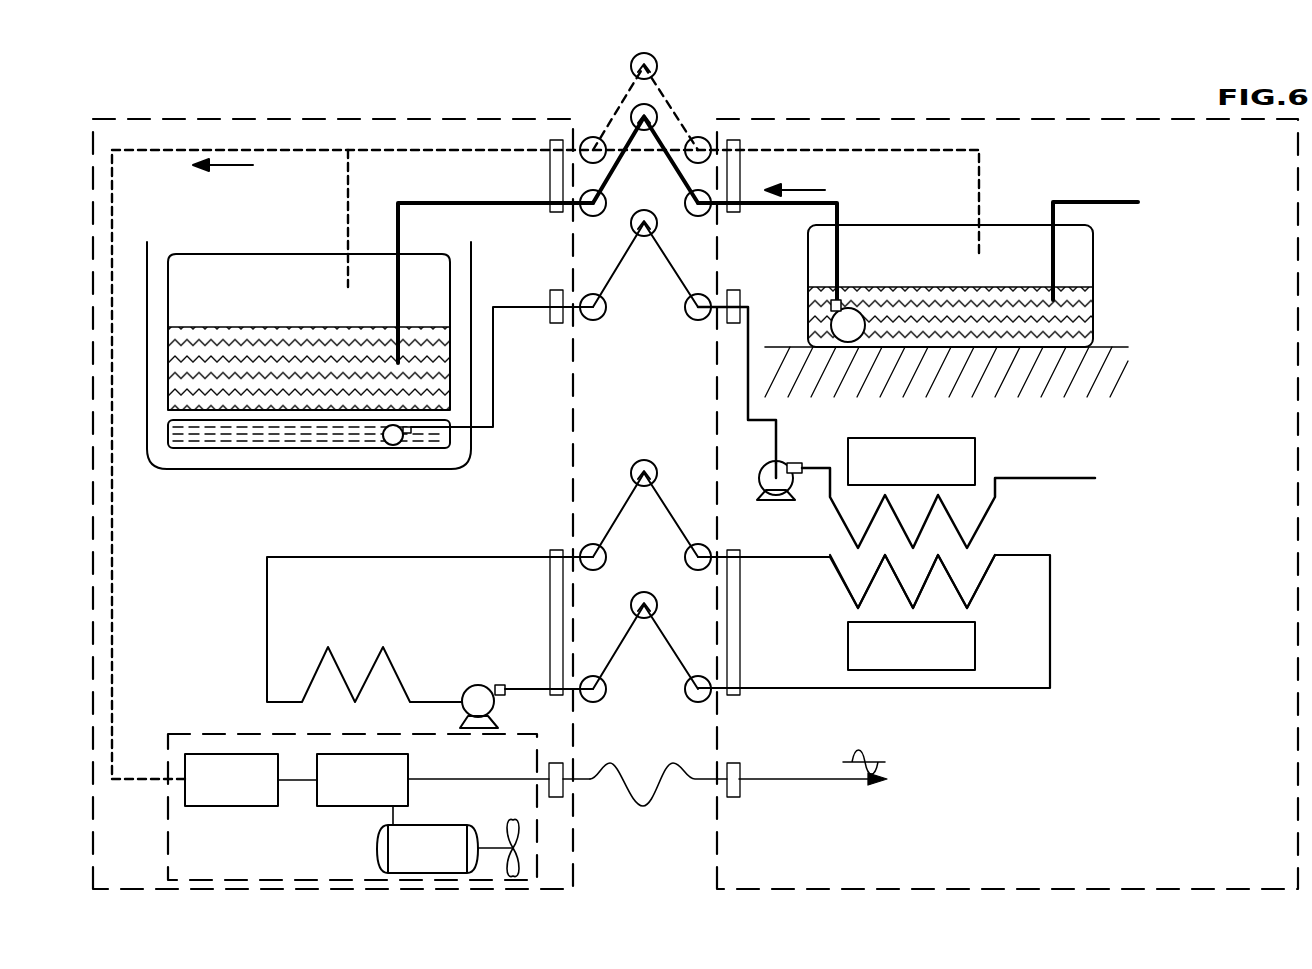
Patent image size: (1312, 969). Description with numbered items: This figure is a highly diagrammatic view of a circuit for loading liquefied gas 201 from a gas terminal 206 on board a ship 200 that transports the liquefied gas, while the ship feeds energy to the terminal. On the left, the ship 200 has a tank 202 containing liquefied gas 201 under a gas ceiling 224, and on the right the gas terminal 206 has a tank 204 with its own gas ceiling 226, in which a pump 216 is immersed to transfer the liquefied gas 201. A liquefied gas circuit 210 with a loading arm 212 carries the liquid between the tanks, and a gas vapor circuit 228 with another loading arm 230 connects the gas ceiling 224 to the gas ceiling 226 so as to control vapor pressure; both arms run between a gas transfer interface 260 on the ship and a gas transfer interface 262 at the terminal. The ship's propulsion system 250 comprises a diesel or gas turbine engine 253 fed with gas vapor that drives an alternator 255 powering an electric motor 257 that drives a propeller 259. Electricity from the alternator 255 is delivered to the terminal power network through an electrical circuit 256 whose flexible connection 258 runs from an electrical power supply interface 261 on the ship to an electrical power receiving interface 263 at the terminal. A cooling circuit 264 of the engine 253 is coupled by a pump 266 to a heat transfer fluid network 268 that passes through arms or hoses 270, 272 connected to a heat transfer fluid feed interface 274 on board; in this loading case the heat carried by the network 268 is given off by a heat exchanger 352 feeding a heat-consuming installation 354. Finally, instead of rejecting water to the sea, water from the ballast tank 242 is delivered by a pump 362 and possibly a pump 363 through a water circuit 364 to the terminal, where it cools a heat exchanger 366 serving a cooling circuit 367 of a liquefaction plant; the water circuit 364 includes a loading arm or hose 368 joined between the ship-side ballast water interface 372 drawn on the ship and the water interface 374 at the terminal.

The ship 200 is at (179, 100).
The liquefied gas 201 is at (252, 354).
The tank of the ship 202 is at (186, 254).
The tank of the gas terminal 204 is at (808, 262).
The gas terminal 206 is at (984, 118).
The liquefied gas circuit 210 is at (486, 204).
The loading arm 212 is at (628, 148).
The pump 216 is at (1028, 314).
The gas ceiling of the ship tank 224 is at (288, 278).
The gas ceiling of the terminal tank 226 is at (906, 244).
The gas vapor circuit 228 is at (464, 150).
The loading arm 230 is at (664, 98).
The ballast tank 242 is at (215, 450).
The propulsion system 250 is at (251, 732).
The diesel or gas turbine engine 253 is at (242, 798).
The alternator 255 is at (342, 798).
The electrical circuit 256 is at (514, 778).
The electric motor 257 is at (428, 846).
The flexible connection 258 is at (657, 798).
The propeller 259 is at (513, 836).
The gas transfer interface 260 is at (554, 140).
The electrical power supply interface 261 is at (550, 762).
The gas transfer interface 262 is at (740, 140).
The electrical power receiving interface 263 is at (743, 788).
The cooling circuit 264 is at (400, 680).
The pump 266 is at (458, 688).
The heat transfer fluid network 268 is at (1050, 662).
The arm or hose 270 is at (662, 504).
The arm or hose 272 is at (620, 648).
The heat transfer fluid feed interface 274 is at (562, 548).
The heat exchanger 352 is at (992, 560).
The heat-consuming installation 354 is at (911, 646).
The pump 362 is at (393, 446).
The pump 363 is at (778, 468).
The water circuit 364 is at (518, 308).
The heat exchanger 366 is at (986, 510).
The cooling circuit 367 is at (911, 461).
The loading arm or hose 368 is at (664, 264).
The coupling 372 is at (558, 324).
The water interface 374 is at (740, 296).